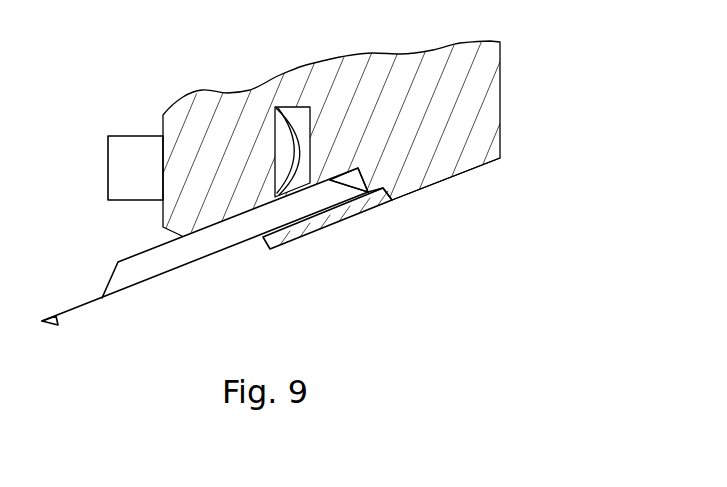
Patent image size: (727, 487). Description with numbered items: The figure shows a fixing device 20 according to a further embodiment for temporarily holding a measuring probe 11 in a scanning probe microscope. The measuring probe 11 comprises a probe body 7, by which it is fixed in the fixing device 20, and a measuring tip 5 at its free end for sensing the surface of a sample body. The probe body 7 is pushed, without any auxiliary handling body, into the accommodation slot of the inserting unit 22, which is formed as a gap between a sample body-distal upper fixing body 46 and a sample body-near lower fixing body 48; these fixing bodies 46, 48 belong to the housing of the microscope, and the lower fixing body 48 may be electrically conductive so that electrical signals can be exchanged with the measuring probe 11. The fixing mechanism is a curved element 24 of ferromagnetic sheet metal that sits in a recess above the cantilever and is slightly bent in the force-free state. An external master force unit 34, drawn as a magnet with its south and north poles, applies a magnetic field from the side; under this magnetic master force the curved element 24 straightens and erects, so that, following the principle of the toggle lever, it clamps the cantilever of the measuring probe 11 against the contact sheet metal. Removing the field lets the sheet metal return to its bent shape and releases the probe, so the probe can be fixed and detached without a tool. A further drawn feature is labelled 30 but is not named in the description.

The measuring tip 5 is at (58, 320).
The probe body 7 is at (135, 270).
The measuring probe 11 is at (96, 257).
The fixing device 20 is at (516, 50).
The inserting unit 22 is at (210, 202).
The curved element 24 is at (280, 135).
The lens 30 is at (293, 135).
The master force unit 34 is at (108, 168).
The upper fixing body 46 is at (443, 165).
The lower fixing body 48 is at (352, 207).